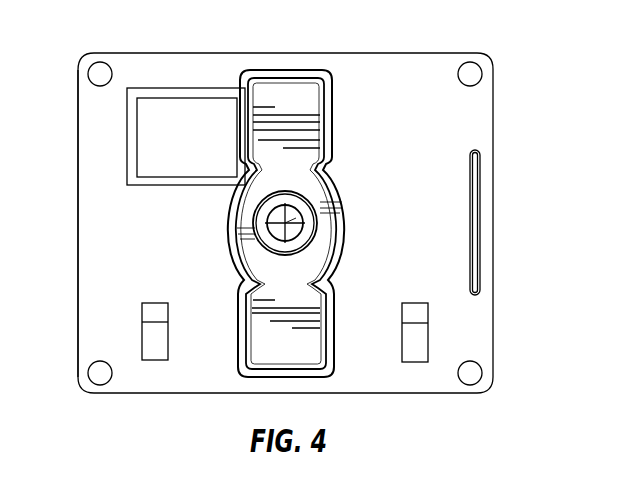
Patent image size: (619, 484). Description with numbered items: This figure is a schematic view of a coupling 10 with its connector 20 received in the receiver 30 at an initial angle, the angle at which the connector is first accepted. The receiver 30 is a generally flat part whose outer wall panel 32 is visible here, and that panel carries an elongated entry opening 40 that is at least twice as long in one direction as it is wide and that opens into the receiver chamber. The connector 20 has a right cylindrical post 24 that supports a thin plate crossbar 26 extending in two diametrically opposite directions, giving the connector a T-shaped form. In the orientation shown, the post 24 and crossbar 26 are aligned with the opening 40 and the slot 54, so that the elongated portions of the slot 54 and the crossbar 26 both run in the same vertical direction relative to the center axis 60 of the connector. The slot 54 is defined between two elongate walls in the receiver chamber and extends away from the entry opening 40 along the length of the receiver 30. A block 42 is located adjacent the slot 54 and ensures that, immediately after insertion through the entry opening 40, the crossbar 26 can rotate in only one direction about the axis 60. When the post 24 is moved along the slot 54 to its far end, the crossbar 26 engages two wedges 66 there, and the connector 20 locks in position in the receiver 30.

The coupling 10 is at (257, 263).
The connector 20 is at (338, 120).
The post 24 is at (253, 225).
The crossbar 26 is at (281, 98).
The receiver 30 is at (86, 398).
The outer wall panel 32 is at (92, 307).
The entry opening 40 is at (324, 172).
The block 42 is at (127, 133).
The slot 54 is at (323, 303).
The axis 60 is at (296, 218).
The wedges 66 is at (155, 352).